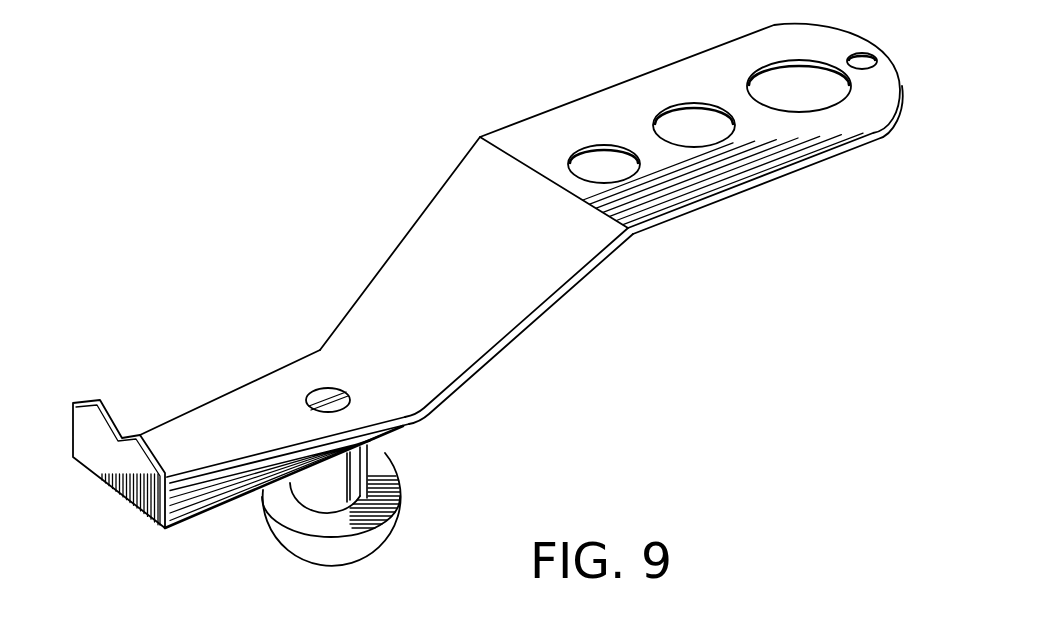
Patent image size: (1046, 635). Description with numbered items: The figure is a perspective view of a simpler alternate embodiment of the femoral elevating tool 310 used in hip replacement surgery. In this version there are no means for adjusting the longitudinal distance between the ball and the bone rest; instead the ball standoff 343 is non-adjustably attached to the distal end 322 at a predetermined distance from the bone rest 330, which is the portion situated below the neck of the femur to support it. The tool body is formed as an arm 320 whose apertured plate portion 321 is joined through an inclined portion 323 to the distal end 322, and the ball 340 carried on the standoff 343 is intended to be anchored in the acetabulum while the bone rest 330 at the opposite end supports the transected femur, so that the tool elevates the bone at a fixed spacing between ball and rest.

The bracket assembly 310 is at (255, 293).
The bracket arm 320 is at (400, 232).
The apertured mounting plate portion 321 is at (803, 137).
The distal end 322 is at (197, 413).
The inclined intermediate portion 323 is at (523, 293).
The bone rest 330 is at (68, 427).
The ball stud base 340 is at (402, 527).
The ball standoff 343 is at (358, 468).